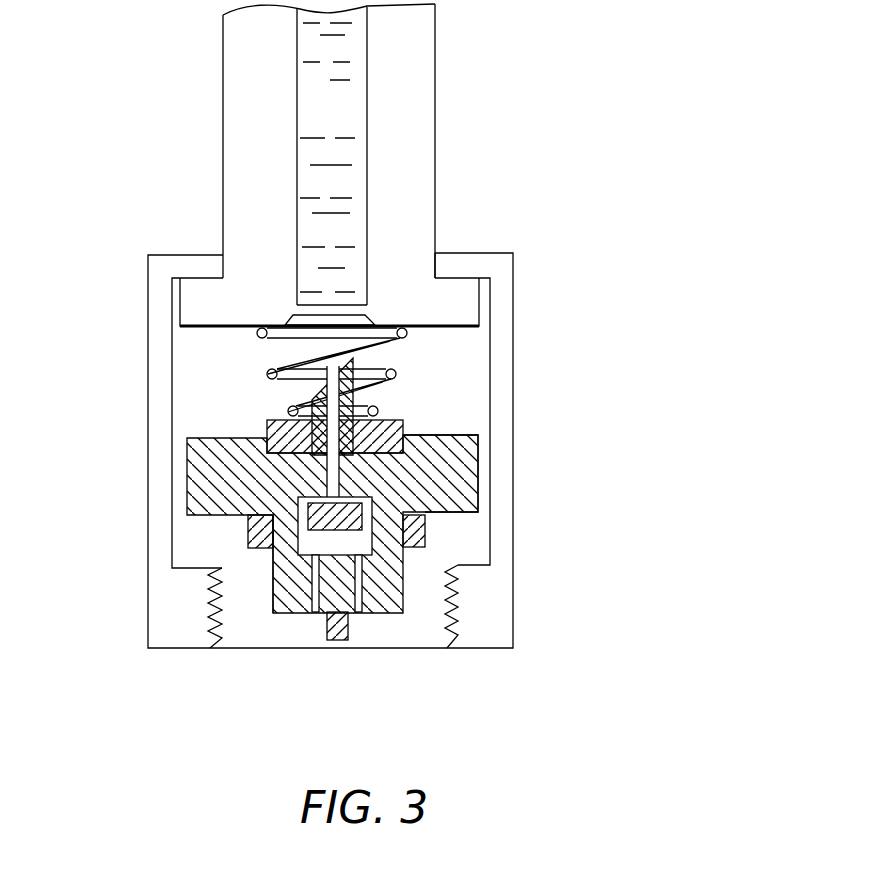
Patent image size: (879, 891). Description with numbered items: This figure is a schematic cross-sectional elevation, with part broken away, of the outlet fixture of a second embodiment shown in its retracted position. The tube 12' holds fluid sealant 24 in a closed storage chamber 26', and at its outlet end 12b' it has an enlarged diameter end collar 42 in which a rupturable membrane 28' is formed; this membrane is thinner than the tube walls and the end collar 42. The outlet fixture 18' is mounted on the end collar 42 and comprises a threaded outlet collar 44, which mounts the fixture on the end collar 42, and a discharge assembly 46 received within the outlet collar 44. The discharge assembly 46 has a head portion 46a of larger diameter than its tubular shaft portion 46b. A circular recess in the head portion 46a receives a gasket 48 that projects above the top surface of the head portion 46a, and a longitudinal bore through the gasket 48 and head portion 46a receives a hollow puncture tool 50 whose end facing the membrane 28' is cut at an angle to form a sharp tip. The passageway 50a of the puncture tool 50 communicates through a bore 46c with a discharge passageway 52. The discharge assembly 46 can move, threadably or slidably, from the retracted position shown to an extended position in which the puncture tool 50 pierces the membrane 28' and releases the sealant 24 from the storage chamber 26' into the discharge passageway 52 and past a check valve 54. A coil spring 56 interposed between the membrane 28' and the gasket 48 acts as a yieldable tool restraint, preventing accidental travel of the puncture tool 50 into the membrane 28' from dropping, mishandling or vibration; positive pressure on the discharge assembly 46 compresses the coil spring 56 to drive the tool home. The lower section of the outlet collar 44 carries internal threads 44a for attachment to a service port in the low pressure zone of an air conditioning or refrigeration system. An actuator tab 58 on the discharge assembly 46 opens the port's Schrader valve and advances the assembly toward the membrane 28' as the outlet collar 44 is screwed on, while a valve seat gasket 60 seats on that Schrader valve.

The tube 12' is at (368, 154).
The outlet end 12b' is at (493, 231).
The outlet fixture 18' is at (320, 367).
The fluid sealant 24 is at (318, 154).
The closed storage chamber 26' is at (327, 157).
The rupturable membrane 28' is at (397, 223).
The end collar 42 is at (243, 302).
The outlet collar 44 is at (517, 483).
The threads 44a is at (227, 607).
The discharge assembly 46 is at (460, 492).
The head portion 46a is at (457, 467).
The tubular shaft portion 46b is at (273, 557).
The bore 46c is at (248, 543).
The gasket 48 is at (417, 423).
The puncture tool 50 is at (360, 362).
The passageway 50a is at (323, 450).
The discharge passageway 52 is at (272, 630).
The check valve 54 is at (322, 543).
The coil spring 56 is at (427, 323).
The actuator tab 58 is at (343, 628).
The valve seat gasket 60 is at (427, 528).